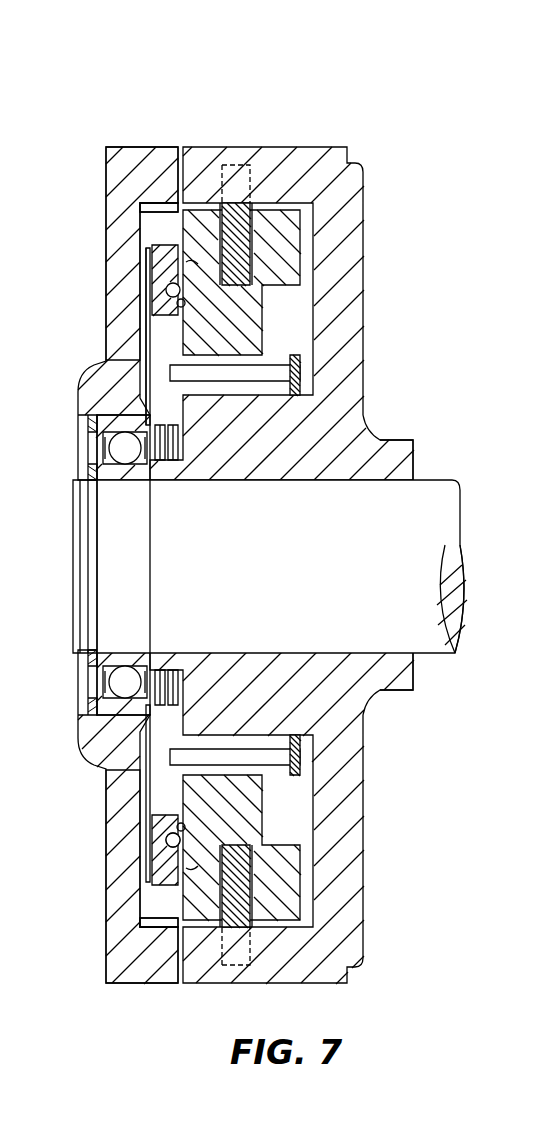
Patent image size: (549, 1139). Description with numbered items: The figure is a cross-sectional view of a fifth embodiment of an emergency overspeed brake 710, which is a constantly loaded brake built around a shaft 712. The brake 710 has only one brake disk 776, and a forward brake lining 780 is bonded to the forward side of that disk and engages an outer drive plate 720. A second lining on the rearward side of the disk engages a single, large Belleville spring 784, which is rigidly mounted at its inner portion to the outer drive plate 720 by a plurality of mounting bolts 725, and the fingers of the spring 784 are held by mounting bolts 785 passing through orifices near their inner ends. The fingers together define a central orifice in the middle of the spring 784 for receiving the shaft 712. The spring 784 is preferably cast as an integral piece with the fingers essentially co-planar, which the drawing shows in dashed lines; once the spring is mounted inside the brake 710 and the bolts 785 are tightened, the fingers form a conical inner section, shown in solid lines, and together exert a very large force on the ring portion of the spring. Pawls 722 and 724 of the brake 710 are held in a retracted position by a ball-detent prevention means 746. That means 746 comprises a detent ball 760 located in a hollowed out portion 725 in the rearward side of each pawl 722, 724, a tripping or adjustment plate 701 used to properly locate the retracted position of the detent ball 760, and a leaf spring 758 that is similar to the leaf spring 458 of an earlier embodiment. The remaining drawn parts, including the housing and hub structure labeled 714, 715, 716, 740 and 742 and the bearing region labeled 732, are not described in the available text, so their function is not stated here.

The emergency overspeed brake 710 is at (245, 78).
The shaft 712 is at (305, 588).
The housing 714 is at (126, 147).
The hub collar 715 is at (416, 447).
The rotor hub 716 is at (365, 302).
The outer drive plate 720 is at (163, 219).
The pawl 722 is at (150, 905).
The pawl 724 is at (158, 247).
The hollowed out portion 725 is at (185, 306).
The bearing 732 is at (68, 455).
The upper pole piece 740 is at (142, 214).
The lower pole piece 742 is at (145, 983).
The ball-detent prevention means 746 is at (166, 290).
The leaf spring 758 is at (170, 832).
The detent ball 760 is at (148, 290).
The brake disk 776 is at (252, 150).
The forward brake lining 780 is at (222, 185).
The Belleville spring 784 is at (305, 252).
The mounting bolt 785 is at (300, 392).
The tripping or adjustment plate 701 is at (220, 564).
The leaf spring 458 is at (148, 332).